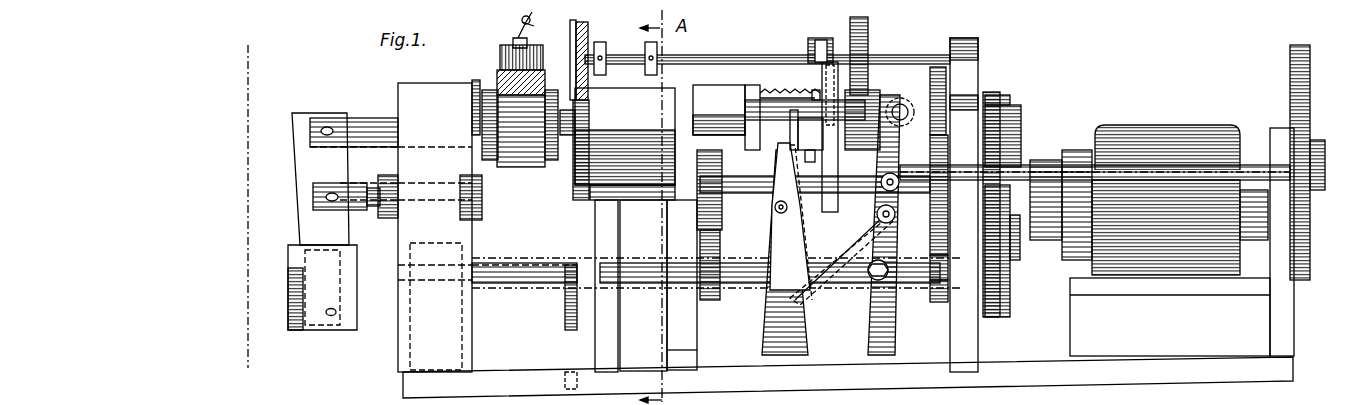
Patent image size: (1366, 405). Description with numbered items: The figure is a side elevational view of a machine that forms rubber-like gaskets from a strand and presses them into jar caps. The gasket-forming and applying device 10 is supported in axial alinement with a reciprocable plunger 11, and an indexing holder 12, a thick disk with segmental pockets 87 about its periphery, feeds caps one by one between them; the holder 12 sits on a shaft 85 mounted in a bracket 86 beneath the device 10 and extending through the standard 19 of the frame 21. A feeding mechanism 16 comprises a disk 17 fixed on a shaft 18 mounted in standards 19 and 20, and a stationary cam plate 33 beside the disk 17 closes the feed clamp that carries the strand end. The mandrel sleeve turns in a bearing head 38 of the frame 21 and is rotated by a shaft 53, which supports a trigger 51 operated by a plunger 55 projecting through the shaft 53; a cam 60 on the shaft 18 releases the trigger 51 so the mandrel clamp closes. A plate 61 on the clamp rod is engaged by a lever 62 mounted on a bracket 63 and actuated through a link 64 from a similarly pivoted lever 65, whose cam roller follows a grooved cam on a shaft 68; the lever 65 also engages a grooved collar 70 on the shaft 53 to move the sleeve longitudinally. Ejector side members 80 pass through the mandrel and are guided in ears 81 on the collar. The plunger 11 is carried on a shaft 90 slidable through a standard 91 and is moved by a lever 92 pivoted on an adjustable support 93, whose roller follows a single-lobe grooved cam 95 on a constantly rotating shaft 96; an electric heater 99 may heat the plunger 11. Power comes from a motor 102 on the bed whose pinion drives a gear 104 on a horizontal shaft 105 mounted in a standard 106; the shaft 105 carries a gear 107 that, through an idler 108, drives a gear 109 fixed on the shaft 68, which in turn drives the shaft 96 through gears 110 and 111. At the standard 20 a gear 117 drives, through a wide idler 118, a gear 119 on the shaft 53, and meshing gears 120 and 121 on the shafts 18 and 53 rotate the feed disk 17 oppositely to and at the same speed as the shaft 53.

The gasket-forming and applying device 10 is at (264, 62).
The reciprocable plunger 11 is at (551, 165).
The indexing holder 12 is at (564, 318).
The feeding mechanism 16 is at (588, 25).
The disk 17 is at (590, 38).
The shaft 18 is at (725, 55).
The standard 19 is at (676, 347).
The standard 20 is at (962, 335).
The frame 21 is at (1143, 368).
The cam plate 33 is at (577, 37).
The bearing head 38 is at (625, 144).
The trigger 51 is at (806, 222).
The shaft 53 is at (988, 95).
The plunger 55 is at (833, 100).
The cam 60 is at (826, 40).
The plate 61 is at (809, 136).
The lever 62 is at (776, 165).
The bracket 63 is at (803, 318).
The link 64 is at (838, 232).
The lever 65 is at (866, 262).
The shaft 68 is at (815, 196).
The grooved collar 70 is at (898, 100).
The side member 80 is at (752, 85).
The ears 81 is at (760, 93).
The shaft 85 is at (716, 273).
The bracket 86 is at (612, 319).
The segmental pockets 87 is at (570, 208).
The shaft 90 is at (372, 118).
The standard 91 is at (405, 155).
The lever 92 is at (303, 173).
The adjustable support 93 is at (358, 188).
The grooved cam 95 is at (288, 297).
The shaft 96 is at (500, 280).
The electric heater 99 is at (524, 167).
The motor 102 is at (1170, 136).
The gear 104 is at (1312, 262).
The horizontal shaft 105 is at (1165, 178).
The standard 106 is at (1282, 322).
The gear 107 is at (946, 155).
The idler 108 is at (930, 270).
The gear 109 is at (935, 67).
The gear 110 is at (735, 222).
The gear 111 is at (720, 300).
The gear 117 is at (1010, 295).
The idler 118 is at (1010, 140).
The gear 119 is at (1010, 96).
The gear 120 is at (868, 22).
The gear 121 is at (872, 90).